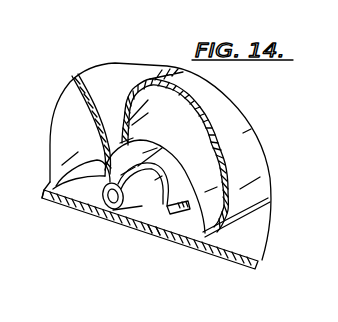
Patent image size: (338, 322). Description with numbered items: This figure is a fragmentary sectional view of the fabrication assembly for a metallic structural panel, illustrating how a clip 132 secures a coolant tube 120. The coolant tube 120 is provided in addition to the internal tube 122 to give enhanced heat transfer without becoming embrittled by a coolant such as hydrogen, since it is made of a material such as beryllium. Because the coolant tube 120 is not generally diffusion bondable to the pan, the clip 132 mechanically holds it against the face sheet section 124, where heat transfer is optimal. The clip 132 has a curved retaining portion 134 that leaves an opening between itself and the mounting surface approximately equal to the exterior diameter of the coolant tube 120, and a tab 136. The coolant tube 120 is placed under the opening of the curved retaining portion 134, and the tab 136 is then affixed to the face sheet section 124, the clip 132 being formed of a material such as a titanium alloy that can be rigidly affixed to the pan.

The coolant tube 120 is at (103, 213).
The internal tube 122 is at (167, 64).
The face sheet section 124 is at (254, 263).
The clip 132 is at (181, 222).
The curved retaining portion 134 is at (44, 200).
The tab 136 is at (152, 237).